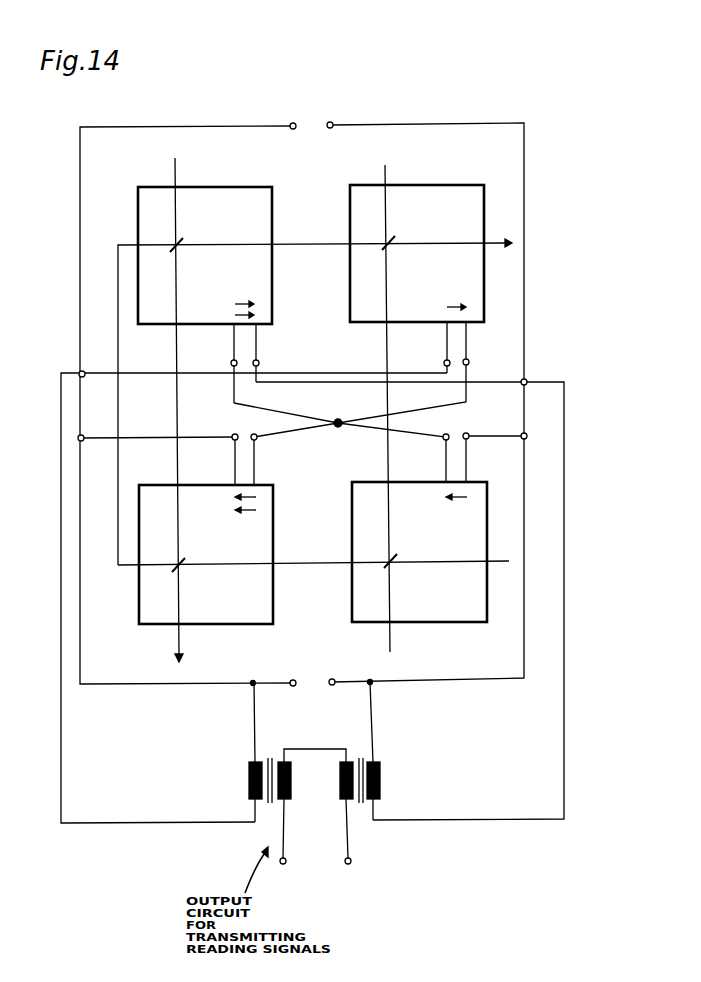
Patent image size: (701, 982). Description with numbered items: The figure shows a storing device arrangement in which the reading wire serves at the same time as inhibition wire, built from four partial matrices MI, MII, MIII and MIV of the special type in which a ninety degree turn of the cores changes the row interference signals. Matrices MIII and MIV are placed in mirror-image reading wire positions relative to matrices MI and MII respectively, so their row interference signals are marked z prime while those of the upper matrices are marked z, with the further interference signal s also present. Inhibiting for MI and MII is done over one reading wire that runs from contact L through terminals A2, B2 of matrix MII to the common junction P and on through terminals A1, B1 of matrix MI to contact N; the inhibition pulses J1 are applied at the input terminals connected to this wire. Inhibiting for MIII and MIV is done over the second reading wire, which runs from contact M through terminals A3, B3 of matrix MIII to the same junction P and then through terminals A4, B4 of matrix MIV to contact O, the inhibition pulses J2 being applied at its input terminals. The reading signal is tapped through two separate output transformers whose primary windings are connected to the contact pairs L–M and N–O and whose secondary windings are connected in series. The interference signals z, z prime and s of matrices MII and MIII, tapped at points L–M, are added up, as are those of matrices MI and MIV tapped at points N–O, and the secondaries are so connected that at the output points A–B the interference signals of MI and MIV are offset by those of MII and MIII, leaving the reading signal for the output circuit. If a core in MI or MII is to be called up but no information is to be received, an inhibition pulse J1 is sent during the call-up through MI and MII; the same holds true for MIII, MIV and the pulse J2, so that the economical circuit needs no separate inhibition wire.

The partial matrix I MI is at (205, 244).
The partial matrix II MII is at (417, 240).
The partial matrix III MIII is at (206, 568).
The partial matrix IV MIV is at (419, 565).
The reading wire terminal A1 is at (275, 373).
The reading wire terminal B1 is at (266, 353).
The reading wire terminal A2 is at (436, 347).
The reading wire terminal B2 is at (414, 372).
The reading wire terminal A3 is at (228, 452).
The reading wire terminal B3 is at (294, 452).
The reading wire terminal A4 is at (394, 451).
The reading wire terminal B4 is at (468, 451).
The common junction point P is at (337, 433).
The contact L is at (82, 383).
The contact M is at (78, 430).
The contact N is at (525, 391).
The contact O is at (524, 427).
The inhibition pulses J1 is at (296, 124).
The inhibition pulses J2 is at (296, 685).
The output terminal A is at (282, 843).
The output terminal B is at (347, 843).